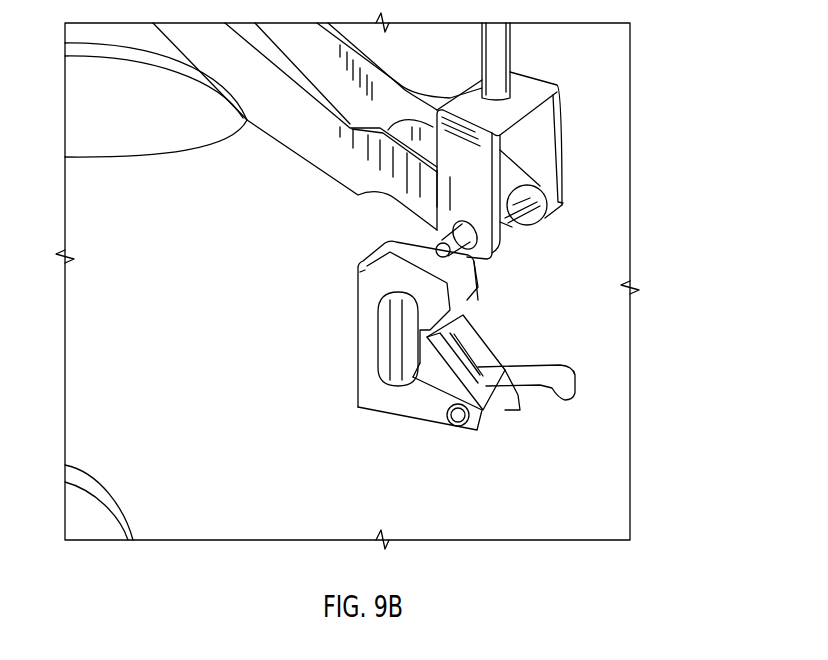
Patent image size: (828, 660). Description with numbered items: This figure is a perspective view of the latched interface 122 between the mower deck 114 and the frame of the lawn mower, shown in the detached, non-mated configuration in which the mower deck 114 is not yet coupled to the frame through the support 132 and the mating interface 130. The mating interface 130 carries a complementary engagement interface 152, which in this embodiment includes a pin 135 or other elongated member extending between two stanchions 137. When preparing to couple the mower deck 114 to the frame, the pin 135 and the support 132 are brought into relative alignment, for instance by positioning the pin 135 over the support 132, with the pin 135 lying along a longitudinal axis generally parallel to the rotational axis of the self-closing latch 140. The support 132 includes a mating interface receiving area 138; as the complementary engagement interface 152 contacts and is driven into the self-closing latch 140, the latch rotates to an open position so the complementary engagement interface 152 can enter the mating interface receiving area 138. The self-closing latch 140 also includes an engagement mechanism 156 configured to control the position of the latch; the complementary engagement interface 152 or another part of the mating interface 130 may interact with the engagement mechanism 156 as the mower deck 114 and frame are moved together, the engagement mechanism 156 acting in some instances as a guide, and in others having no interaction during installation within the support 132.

The mower deck 114 is at (623, 471).
The latched interface 122 is at (561, 277).
The mating interface 130 is at (545, 88).
The support 132 is at (410, 410).
The pin 135 is at (527, 188).
The stanchions 137 is at (515, 132).
The mating interface receiving area 138 is at (383, 338).
The self-closing latch 140 is at (478, 338).
The complementary engagement interface 152 is at (563, 203).
The engagement mechanism 156 is at (545, 380).